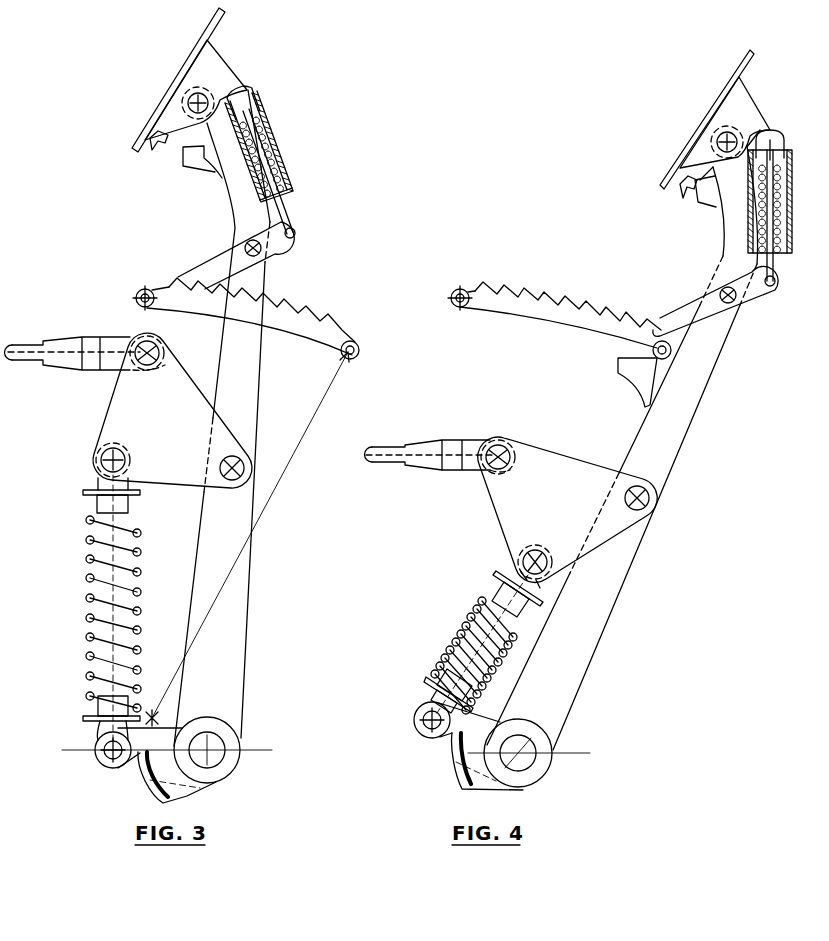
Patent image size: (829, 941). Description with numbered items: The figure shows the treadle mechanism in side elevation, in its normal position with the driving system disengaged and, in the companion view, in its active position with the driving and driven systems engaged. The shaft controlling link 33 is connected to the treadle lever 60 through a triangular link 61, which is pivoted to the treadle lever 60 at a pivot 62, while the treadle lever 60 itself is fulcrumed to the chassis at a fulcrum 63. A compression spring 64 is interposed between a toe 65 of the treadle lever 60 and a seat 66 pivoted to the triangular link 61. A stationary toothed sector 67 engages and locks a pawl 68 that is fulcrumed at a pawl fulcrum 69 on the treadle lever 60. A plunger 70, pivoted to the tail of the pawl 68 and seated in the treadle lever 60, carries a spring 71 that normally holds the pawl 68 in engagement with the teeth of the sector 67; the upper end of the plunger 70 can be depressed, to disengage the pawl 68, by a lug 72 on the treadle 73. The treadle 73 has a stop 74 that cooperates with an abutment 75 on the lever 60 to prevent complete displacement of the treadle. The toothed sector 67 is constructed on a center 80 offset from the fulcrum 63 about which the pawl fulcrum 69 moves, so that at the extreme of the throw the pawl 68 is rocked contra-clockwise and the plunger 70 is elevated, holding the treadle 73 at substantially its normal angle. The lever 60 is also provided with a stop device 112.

In FIG. 3, the shaft controlling link 33 is at (28, 343).
In FIG. 4, the shaft controlling link 33 is at (419, 436).
In FIG. 3, the treadle lever 60 is at (253, 573).
In FIG. 4, the treadle lever 60 is at (613, 621).
In FIG. 3, the triangular link 61 is at (112, 410).
In FIG. 4, the triangular link 61 is at (499, 509).
In FIG. 3, the pivot 62 is at (249, 466).
In FIG. 4, the pivot 62 is at (652, 491).
In FIG. 3, the fulcrum 63 is at (210, 748).
In FIG. 4, the fulcrum 63 is at (523, 752).
In FIG. 4, the compression spring 64 is at (470, 618).
In FIG. 3, the toe 65 is at (108, 761).
In FIG. 4, the toe 65 is at (441, 738).
In FIG. 3, the seat 66 is at (100, 489).
In FIG. 4, the seat 66 is at (515, 564).
In FIG. 3, the toothed sector 67 is at (359, 347).
In FIG. 4, the toothed sector 67 is at (671, 350).
In FIG. 3, the pawl 68 is at (204, 258).
In FIG. 4, the pawl 68 is at (691, 305).
In FIG. 3, the pawl fulcrum 69 is at (267, 252).
In FIG. 4, the pawl fulcrum 69 is at (737, 306).
In FIG. 3, the plunger 70 is at (284, 203).
In FIG. 4, the plunger 70 is at (776, 279).
In FIG. 3, the spring 71 is at (283, 152).
In FIG. 4, the spring 71 is at (826, 221).
In FIG. 3, the lug 72 is at (240, 77).
In FIG. 4, the lug 72 is at (799, 107).
In FIG. 3, the treadle 73 is at (183, 76).
In FIG. 4, the treadle 73 is at (722, 112).
In FIG. 3, the stop 74 is at (155, 150).
In FIG. 4, the stop 74 is at (688, 188).
In FIG. 3, the abutment 75 is at (211, 200).
In FIG. 4, the abutment 75 is at (700, 204).
In FIG. 3, the center 80 is at (158, 716).
In FIG. 3, the stop device 112 is at (147, 787).
In FIG. 4, the stop device 112 is at (453, 767).